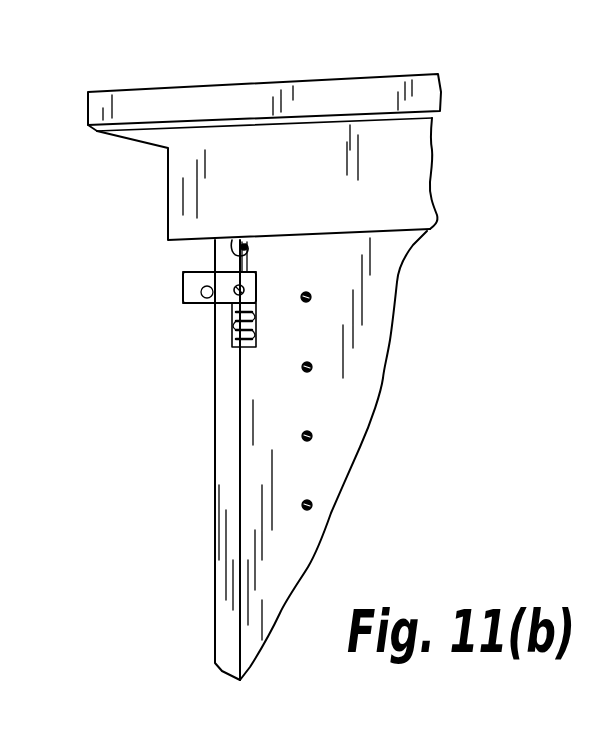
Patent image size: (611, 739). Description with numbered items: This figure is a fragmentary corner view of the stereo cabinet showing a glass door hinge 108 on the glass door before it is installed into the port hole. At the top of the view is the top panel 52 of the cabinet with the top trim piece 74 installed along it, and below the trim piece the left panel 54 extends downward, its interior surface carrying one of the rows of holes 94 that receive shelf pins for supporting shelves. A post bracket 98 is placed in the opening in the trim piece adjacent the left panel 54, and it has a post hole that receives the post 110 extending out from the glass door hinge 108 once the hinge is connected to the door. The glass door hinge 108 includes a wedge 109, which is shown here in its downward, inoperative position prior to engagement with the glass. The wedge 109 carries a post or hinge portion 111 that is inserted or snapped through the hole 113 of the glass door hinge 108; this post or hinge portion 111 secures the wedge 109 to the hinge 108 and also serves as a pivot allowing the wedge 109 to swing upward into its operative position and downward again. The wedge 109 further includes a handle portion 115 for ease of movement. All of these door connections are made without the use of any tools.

The top panel 52 is at (335, 92).
The top trim piece 74 is at (415, 181).
The left panel 54 is at (379, 372).
The holes 94 is at (326, 266).
The glass door hinge 108 is at (183, 290).
The post or hinge portion 111 is at (236, 288).
The hole 113 is at (196, 303).
The post bracket 98 is at (244, 245).
The post 110 is at (231, 240).
The wedge 109 is at (228, 347).
The handle portion 115 is at (20, 712).